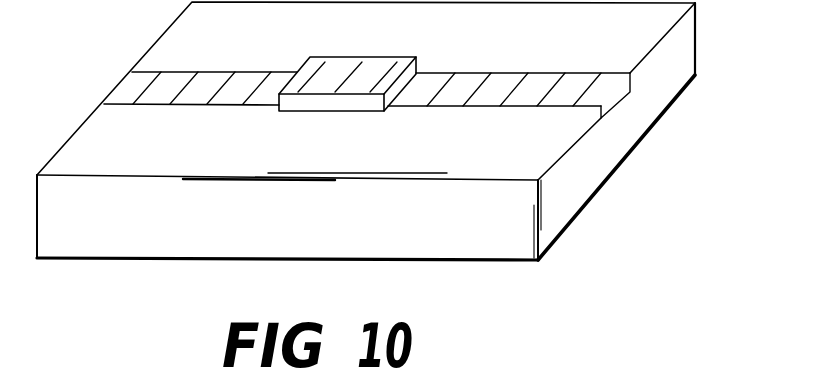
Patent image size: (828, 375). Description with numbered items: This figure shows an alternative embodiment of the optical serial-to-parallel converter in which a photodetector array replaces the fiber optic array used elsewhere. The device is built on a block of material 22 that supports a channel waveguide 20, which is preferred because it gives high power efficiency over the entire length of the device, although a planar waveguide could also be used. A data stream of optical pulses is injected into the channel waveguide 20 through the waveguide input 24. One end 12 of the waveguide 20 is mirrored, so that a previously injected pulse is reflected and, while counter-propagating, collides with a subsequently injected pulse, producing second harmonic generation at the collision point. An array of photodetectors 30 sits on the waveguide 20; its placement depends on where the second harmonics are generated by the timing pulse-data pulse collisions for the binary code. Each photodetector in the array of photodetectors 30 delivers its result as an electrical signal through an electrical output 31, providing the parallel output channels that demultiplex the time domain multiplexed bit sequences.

The mirrored end 12 is at (613, 113).
The channel waveguide 20 is at (562, 107).
The block of material 22 is at (242, 240).
The waveguide input 24 is at (122, 80).
The array of photodetectors 30 is at (406, 62).
The electrical output 31 is at (313, 72).